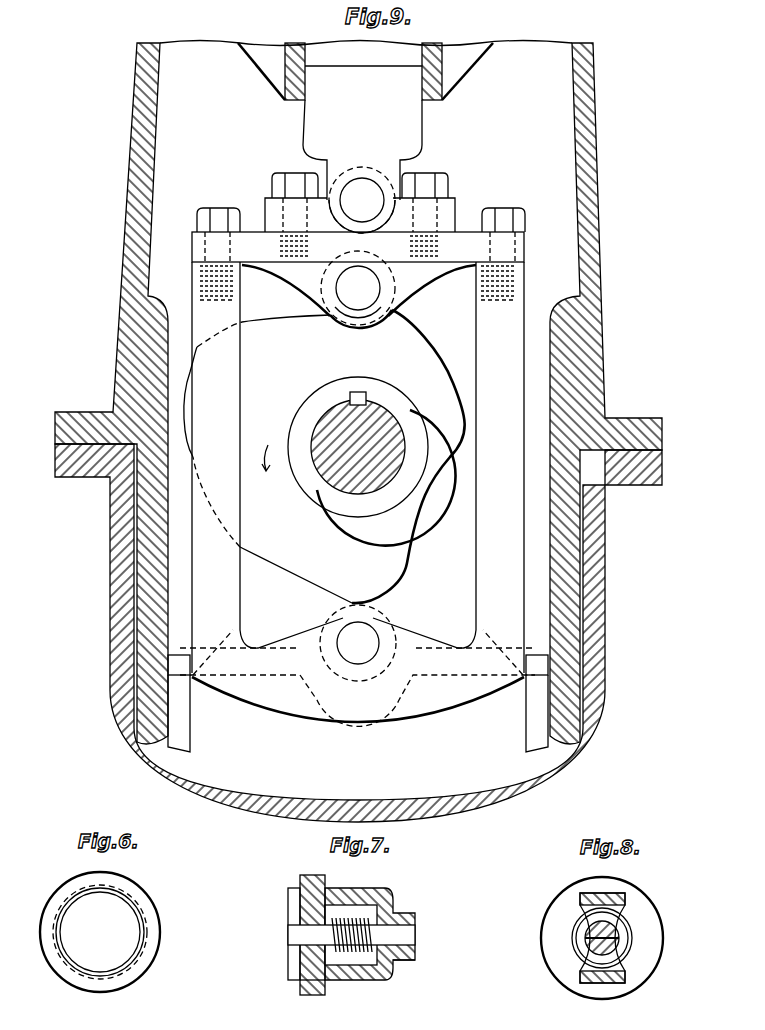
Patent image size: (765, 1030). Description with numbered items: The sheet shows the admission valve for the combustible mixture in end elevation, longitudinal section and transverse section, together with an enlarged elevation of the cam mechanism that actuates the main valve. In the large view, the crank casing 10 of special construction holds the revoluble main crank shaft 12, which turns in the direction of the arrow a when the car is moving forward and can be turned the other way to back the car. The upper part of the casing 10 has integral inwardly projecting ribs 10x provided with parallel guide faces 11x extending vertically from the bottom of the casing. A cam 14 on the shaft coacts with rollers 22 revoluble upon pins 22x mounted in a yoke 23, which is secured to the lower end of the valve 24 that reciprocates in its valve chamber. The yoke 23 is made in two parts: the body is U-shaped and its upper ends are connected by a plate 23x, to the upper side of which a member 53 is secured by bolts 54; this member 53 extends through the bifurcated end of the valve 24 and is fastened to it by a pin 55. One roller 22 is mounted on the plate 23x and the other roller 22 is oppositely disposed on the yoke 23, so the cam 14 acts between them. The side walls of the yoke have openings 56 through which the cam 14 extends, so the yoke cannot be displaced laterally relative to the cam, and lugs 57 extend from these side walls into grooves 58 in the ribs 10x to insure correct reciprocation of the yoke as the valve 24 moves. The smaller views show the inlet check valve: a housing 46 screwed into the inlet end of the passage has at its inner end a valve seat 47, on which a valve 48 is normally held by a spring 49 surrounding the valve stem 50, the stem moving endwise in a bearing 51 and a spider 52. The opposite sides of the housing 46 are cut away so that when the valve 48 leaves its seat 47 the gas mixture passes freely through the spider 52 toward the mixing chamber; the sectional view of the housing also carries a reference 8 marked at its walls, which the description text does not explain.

In FIG. 9, the crank casing 10 is at (590, 168).
In FIG. 9, the inwardly projecting ribs 10x is at (143, 585).
In FIG. 9, the parallel guide faces 11x is at (192, 704).
In FIG. 9, the main crank shaft 12 is at (325, 473).
In FIG. 9, the cam 14 is at (395, 573).
In FIG. 9, the rollers 22 is at (385, 306).
In FIG. 9, the pins 22x is at (364, 306).
In FIG. 9, the yoke 23 is at (478, 549).
In FIG. 9, the plate 23x is at (520, 248).
In FIG. 9, the valve 24 is at (412, 121).
In FIG. 9, the member 53 is at (450, 213).
In FIG. 9, the bolts 54 is at (428, 178).
In FIG. 9, the pin 55 is at (363, 185).
In FIG. 9, the openings 56 is at (246, 301).
In FIG. 9, the lugs 57 is at (178, 668).
In FIG. 9, the grooves 58 is at (182, 733).
In FIG. 9, the arrow a is at (271, 458).
In FIG. 6, the housing 46 is at (148, 900).
In FIG. 7, the housing 46 is at (340, 981).
In FIG. 8, the housing 46 is at (610, 896).
In FIG. 7, the valve seat 47 is at (300, 890).
In FIG. 6, the valve 48 is at (120, 948).
In FIG. 7, the valve 48 is at (300, 921).
In FIG. 7, the spring 49 is at (362, 920).
In FIG. 8, the spring 49 is at (590, 946).
In FIG. 7, the valve stem 50 is at (415, 935).
In FIG. 8, the valve stem 50 is at (620, 931).
In FIG. 7, the bearing 51 is at (400, 958).
In FIG. 7, the spider 52 is at (310, 985).
In FIG. 8, the spider 52 is at (590, 919).
In FIG. 7, the passage 8 is at (372, 903).